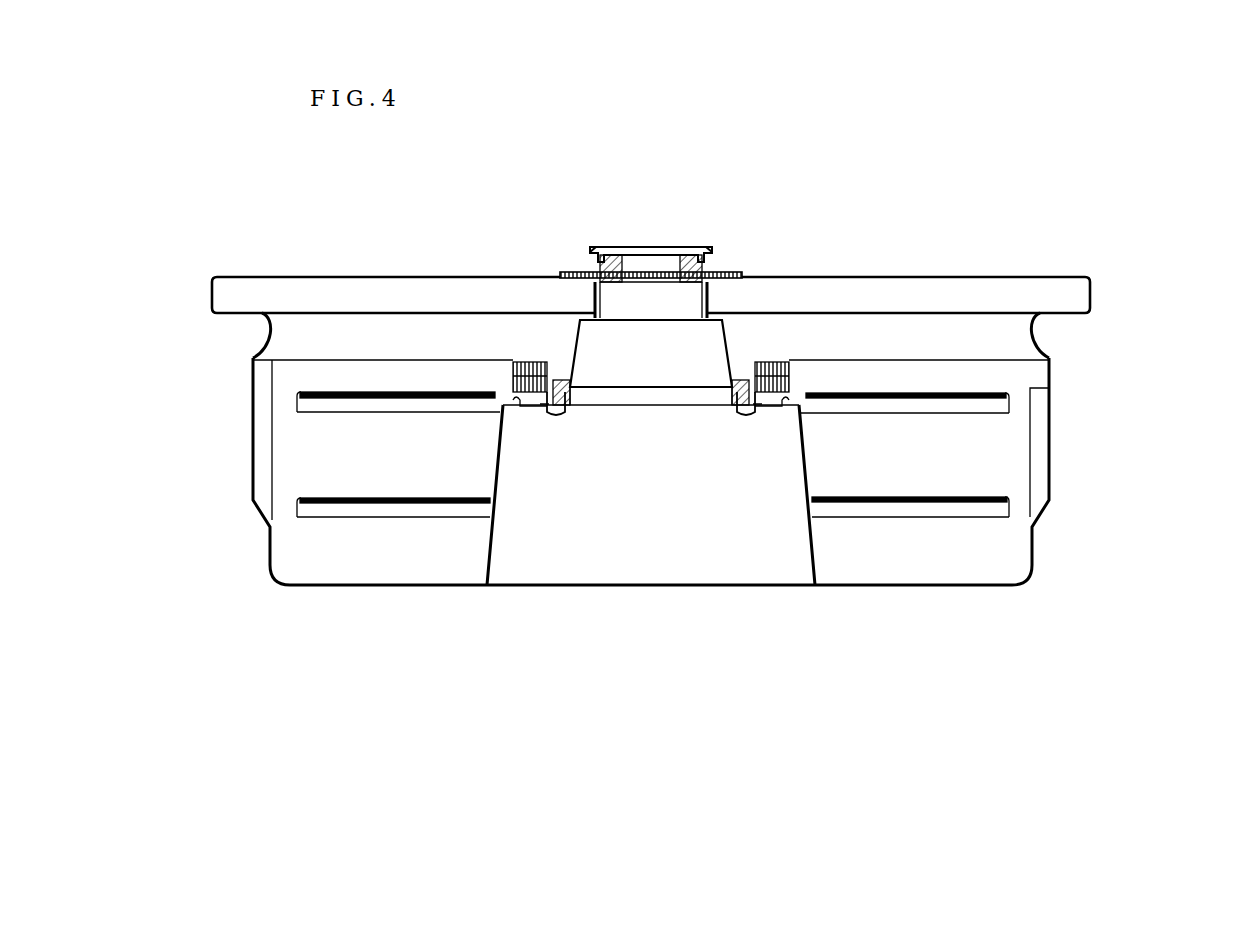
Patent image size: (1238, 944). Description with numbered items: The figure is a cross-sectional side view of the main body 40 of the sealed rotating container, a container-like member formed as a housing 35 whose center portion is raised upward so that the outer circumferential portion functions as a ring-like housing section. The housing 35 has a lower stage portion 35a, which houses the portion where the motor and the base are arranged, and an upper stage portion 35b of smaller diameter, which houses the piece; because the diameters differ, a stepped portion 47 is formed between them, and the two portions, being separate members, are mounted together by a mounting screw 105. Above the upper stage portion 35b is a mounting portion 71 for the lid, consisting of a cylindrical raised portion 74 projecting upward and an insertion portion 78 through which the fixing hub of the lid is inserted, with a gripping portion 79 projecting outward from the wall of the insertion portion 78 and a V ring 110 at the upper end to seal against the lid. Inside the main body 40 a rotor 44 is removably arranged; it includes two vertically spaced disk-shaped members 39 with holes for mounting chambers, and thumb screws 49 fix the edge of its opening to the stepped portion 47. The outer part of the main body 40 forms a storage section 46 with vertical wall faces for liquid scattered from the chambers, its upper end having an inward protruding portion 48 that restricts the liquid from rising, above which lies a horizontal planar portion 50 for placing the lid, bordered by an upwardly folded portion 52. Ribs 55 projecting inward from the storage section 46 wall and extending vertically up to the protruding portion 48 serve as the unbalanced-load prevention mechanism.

The main body 40 is at (889, 244).
The housing 35 is at (673, 651).
The lower stage portion 35a is at (498, 490).
The upper stage portion 35b is at (577, 350).
The disk-shaped member 39 is at (295, 398).
The rotor 44 is at (412, 392).
The storage section 46 is at (264, 447).
The stepped portion 47 is at (516, 410).
The protruding portion 48 is at (266, 335).
The thumb screw 49 is at (525, 362).
The planar portion 50 is at (243, 312).
The folded portion 52 is at (210, 288).
The rib 55 is at (268, 487).
The mounting portion 71 is at (723, 245).
The cylindrical raised portion 74 is at (593, 300).
The insertion portion 78 is at (636, 258).
The gripping portion 79 is at (734, 272).
The mounting screw 105 is at (560, 414).
The V ring 110 is at (678, 247).